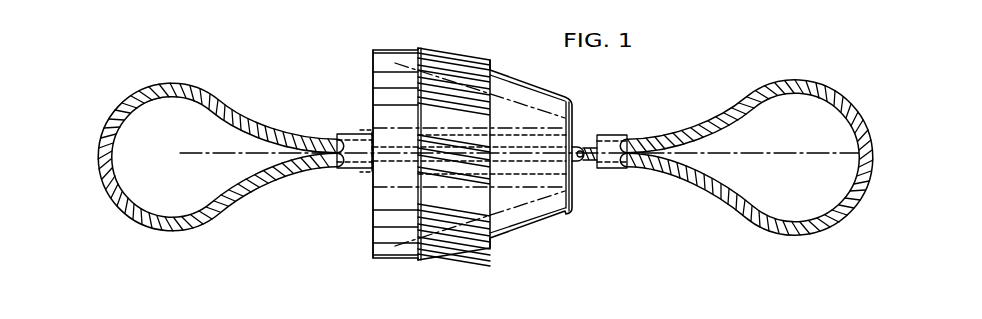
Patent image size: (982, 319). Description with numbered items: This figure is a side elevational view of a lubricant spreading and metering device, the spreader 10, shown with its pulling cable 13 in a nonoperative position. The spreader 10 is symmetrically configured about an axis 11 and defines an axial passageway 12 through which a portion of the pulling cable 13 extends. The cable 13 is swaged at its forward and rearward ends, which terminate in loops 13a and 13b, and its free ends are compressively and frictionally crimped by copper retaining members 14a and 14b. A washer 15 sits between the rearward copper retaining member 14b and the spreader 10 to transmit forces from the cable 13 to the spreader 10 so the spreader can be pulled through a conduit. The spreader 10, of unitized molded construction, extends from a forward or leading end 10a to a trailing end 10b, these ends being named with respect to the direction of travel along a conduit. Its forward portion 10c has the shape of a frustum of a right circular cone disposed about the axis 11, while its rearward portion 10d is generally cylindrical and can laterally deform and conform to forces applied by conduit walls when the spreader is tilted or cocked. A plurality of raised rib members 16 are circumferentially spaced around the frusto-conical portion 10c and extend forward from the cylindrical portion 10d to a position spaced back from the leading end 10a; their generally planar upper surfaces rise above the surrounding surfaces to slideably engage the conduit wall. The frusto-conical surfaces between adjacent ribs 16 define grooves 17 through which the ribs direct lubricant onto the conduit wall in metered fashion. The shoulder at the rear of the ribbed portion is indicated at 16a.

The lubricant spreader 10 is at (483, 50).
The leading end 10a is at (574, 113).
The trailing end 10b is at (373, 73).
The frusto-conical portion 10c is at (571, 214).
The rear cylindrical portion 10d is at (418, 266).
The axis 11 is at (743, 155).
The axial passageway 12 is at (572, 137).
The pulling cable 13 is at (576, 164).
The forward loop 13a is at (756, 94).
The rearward loop 13b is at (169, 85).
The forward copper retaining member 14a is at (616, 169).
The rearward copper retaining member 14b is at (343, 169).
The washer 15 is at (371, 134).
The raised rib members 16 is at (457, 53).
The shoulder of ribbed portion 16a is at (418, 48).
The grooves 17 is at (472, 122).